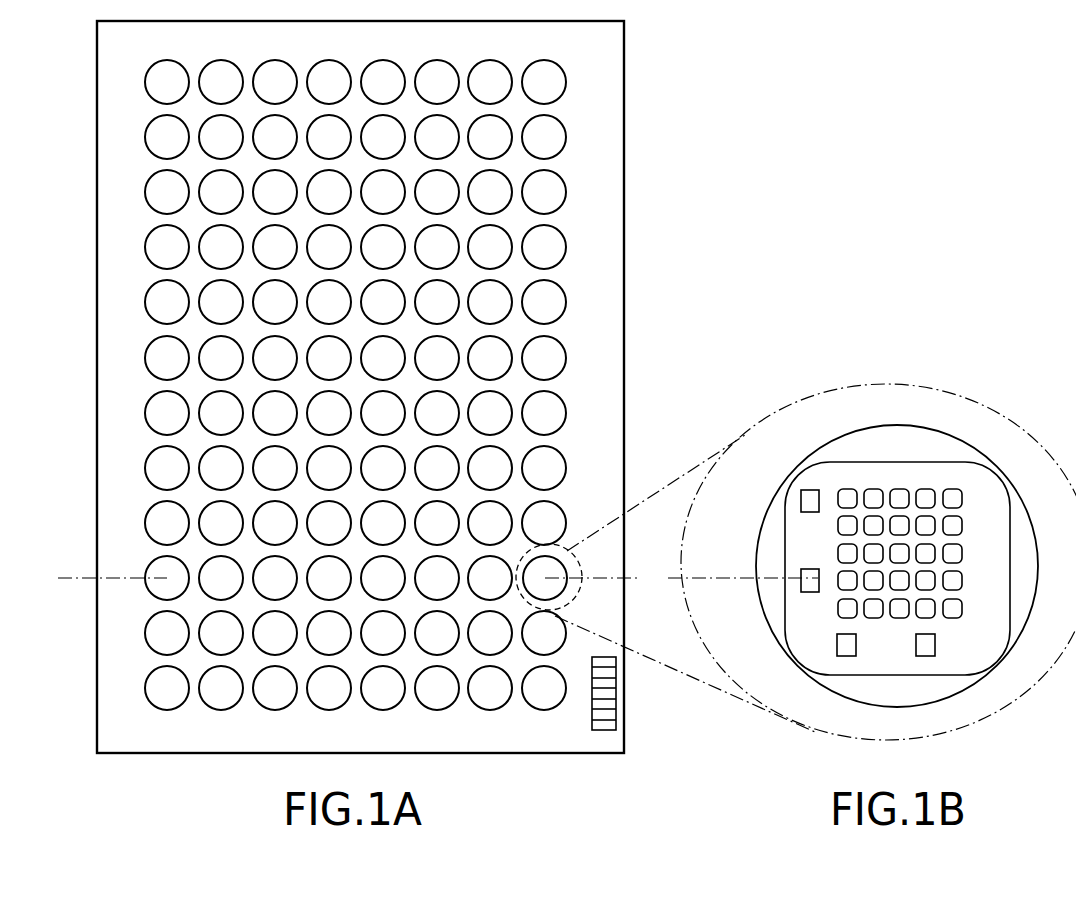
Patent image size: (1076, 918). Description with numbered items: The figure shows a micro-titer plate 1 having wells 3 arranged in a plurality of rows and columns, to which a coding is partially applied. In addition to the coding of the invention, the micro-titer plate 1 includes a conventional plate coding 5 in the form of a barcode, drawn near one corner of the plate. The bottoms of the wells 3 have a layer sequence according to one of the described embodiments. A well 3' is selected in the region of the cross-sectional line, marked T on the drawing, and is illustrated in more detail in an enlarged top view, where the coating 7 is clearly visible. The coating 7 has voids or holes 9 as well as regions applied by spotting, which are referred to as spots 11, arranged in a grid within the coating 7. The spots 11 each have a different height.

In FIG. 1A, the micro-titer plate 1 is at (664, 200).
In FIG. 1A, the wells 3 is at (357, 385).
In FIG. 1A, the selected well 3' is at (591, 560).
In FIG. 1A, the plate coding 5 is at (610, 713).
In FIG. 1A, the coating 7 is at (389, 368).
In FIG. 1B, the coating 7 is at (979, 487).
In FIG. 1B, the voids or holes 9 is at (810, 494).
In FIG. 1B, the spots 11 is at (924, 494).
In FIG. 1A, the section line T is at (56, 591).